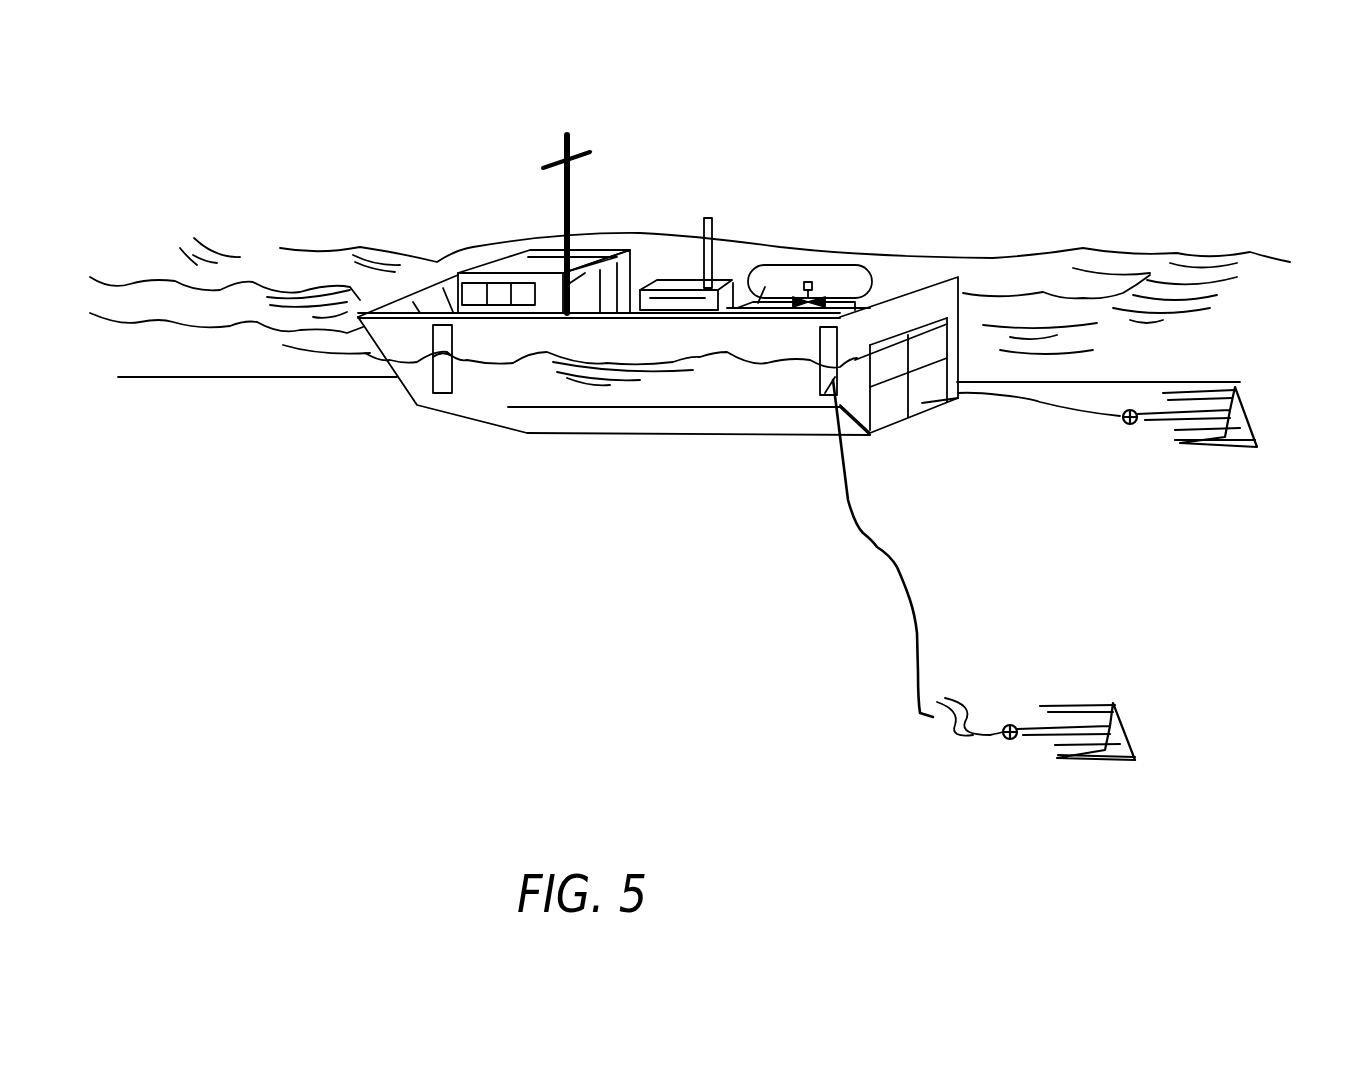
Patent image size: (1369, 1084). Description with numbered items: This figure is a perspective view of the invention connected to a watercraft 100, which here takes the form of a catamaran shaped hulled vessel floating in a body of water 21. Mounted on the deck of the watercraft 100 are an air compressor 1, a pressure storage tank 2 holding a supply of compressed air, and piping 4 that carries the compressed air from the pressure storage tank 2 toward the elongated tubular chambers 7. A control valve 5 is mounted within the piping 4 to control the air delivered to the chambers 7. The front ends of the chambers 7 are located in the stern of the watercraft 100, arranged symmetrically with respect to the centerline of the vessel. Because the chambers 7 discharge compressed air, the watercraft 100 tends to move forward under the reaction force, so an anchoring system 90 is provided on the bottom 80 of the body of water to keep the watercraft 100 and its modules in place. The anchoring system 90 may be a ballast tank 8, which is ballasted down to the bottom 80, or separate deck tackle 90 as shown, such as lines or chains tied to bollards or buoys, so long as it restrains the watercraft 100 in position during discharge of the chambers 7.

The watercraft 100 is at (492, 210).
The body of water 21 is at (337, 247).
The air compressor 1 is at (677, 280).
The pressure storage tank 2 is at (778, 262).
The control valve 5 is at (807, 277).
The piping 4 is at (845, 297).
The ballast tank 8 is at (875, 342).
The elongated tubular chambers 7 is at (892, 410).
The bottom 80 is at (1065, 521).
The anchoring system 90 is at (1178, 441).